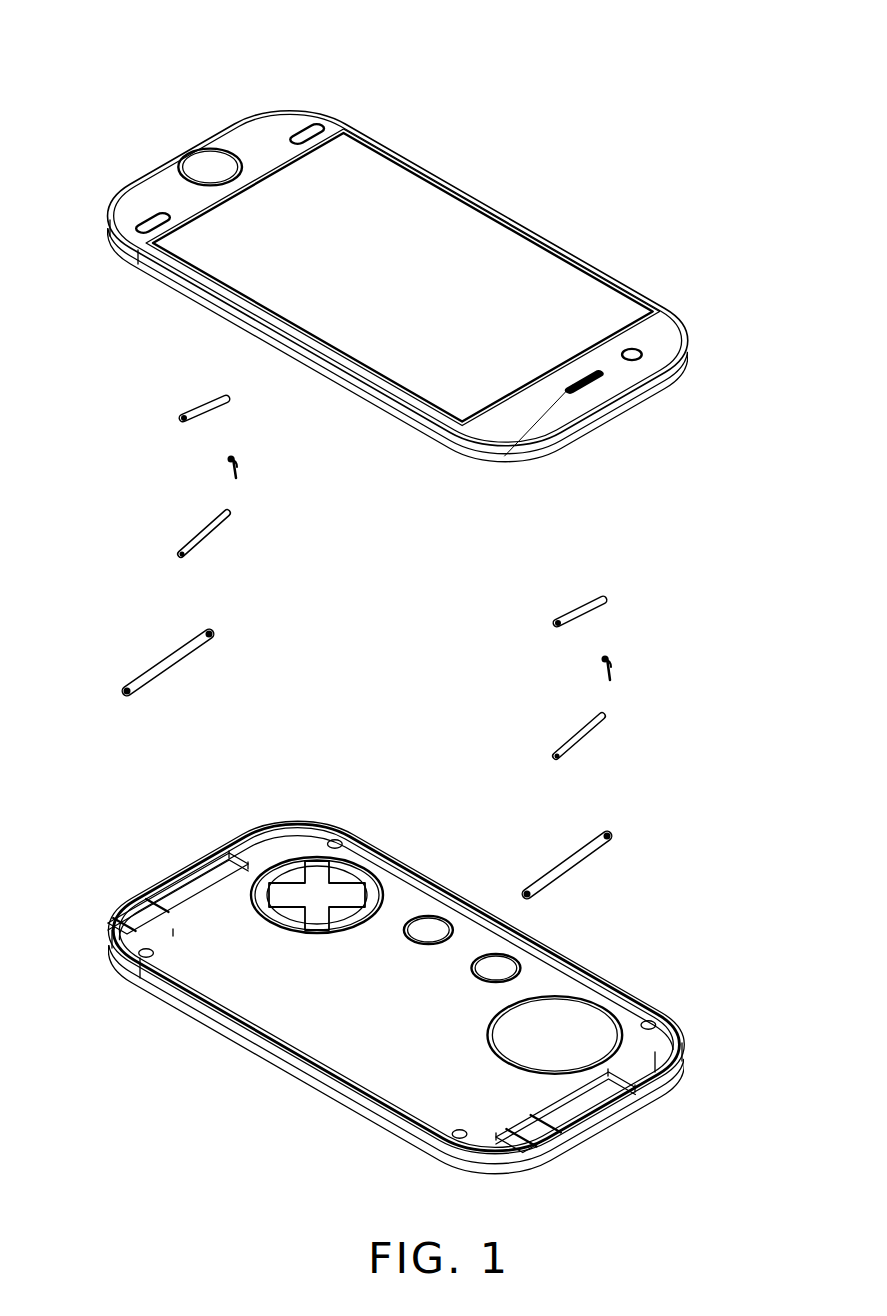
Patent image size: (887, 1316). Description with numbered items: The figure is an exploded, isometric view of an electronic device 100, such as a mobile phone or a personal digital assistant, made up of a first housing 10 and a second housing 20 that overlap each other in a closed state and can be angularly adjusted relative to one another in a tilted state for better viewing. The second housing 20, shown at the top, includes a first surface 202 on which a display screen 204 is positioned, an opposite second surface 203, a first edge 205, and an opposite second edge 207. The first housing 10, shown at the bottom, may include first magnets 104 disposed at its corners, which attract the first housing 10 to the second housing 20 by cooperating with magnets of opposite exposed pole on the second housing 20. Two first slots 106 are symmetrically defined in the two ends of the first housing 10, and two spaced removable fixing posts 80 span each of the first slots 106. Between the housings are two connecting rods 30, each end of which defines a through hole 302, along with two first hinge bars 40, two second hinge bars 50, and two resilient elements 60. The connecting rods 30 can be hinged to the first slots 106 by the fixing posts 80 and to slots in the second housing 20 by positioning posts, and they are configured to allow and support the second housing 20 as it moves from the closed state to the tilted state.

The electronic device 100 is at (446, 31).
The second housing 20 is at (203, 93).
The first housing 10 is at (95, 885).
The first surface 202 is at (642, 377).
The second surface 203 is at (568, 450).
The display screen 204 is at (520, 280).
The first edge 205 is at (200, 302).
The second edge 207 is at (443, 173).
The connecting rod 30 is at (168, 660).
The through hole 302 is at (214, 636).
The first hinge bar 40 is at (198, 533).
The second hinge bar 50 is at (207, 402).
The resilient element 60 is at (240, 466).
The fixing post 80 is at (160, 905).
The first magnet 104 is at (333, 840).
The first slot 106 is at (220, 873).